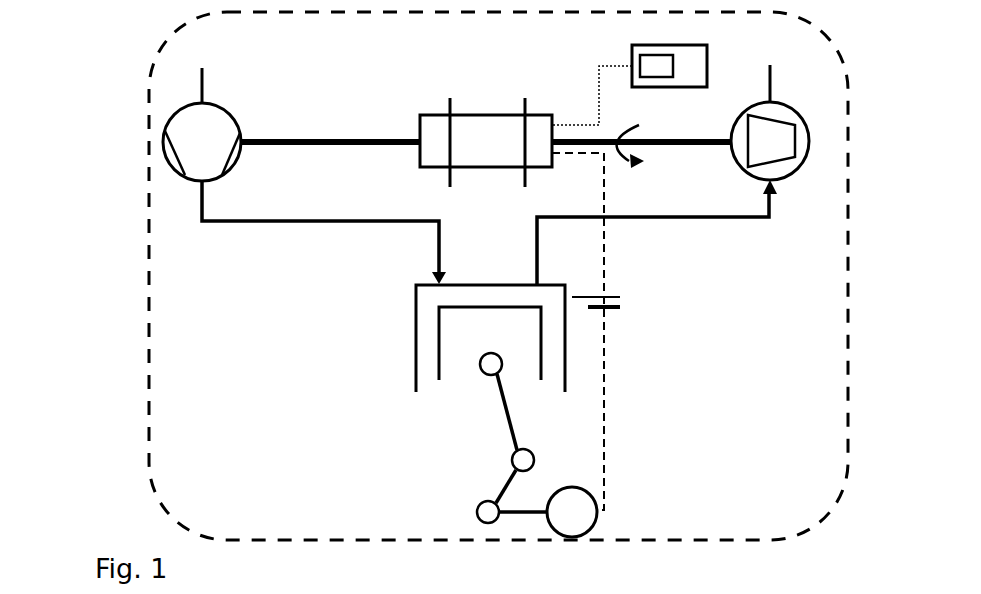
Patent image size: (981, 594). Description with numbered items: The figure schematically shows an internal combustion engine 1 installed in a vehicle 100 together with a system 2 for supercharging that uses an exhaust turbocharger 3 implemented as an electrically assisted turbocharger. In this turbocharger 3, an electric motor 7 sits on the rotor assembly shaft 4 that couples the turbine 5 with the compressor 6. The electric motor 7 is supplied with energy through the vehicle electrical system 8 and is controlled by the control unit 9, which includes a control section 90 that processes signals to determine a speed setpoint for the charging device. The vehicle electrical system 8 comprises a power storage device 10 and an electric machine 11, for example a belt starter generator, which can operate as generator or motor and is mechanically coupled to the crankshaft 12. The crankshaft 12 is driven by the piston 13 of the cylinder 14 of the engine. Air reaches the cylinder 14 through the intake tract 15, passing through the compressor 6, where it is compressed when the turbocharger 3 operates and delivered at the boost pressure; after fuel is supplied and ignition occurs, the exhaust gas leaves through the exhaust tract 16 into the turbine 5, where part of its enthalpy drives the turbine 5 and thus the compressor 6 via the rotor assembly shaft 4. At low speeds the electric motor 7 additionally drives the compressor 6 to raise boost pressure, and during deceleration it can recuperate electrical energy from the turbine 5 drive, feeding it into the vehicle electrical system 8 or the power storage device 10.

The internal combustion engine 1 is at (219, 371).
The system for supercharging 2 is at (168, 68).
The vehicle 100 is at (147, 115).
The exhaust turbocharger 3 is at (276, 127).
The rotor assembly shaft 4 is at (368, 140).
The turbine 5 is at (793, 108).
The compressor 6 is at (168, 162).
The electric motor 7 is at (488, 116).
The vehicle electrical system 8 is at (605, 373).
The control unit 9 is at (657, 45).
The control section 90 is at (632, 50).
The power storage device 10 is at (617, 297).
The electric machine 11 is at (597, 520).
The crankshaft 12 is at (522, 512).
The piston 13 is at (438, 374).
The cylinder 14 is at (416, 342).
The intake tract 15 is at (287, 222).
The exhaust tract 16 is at (726, 217).